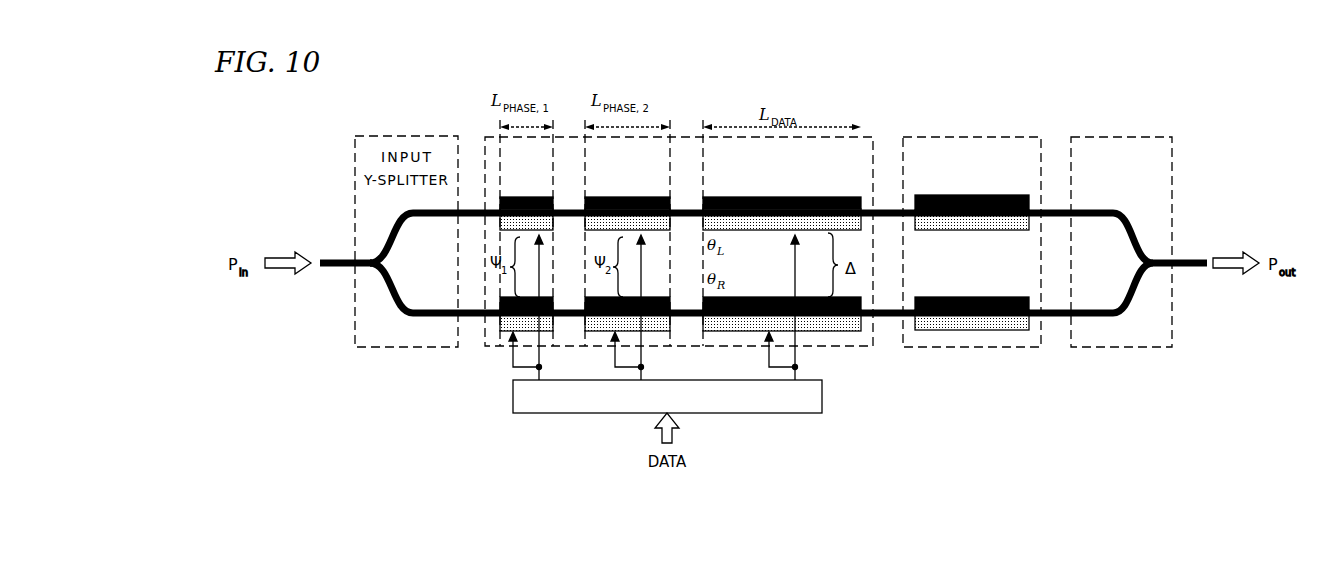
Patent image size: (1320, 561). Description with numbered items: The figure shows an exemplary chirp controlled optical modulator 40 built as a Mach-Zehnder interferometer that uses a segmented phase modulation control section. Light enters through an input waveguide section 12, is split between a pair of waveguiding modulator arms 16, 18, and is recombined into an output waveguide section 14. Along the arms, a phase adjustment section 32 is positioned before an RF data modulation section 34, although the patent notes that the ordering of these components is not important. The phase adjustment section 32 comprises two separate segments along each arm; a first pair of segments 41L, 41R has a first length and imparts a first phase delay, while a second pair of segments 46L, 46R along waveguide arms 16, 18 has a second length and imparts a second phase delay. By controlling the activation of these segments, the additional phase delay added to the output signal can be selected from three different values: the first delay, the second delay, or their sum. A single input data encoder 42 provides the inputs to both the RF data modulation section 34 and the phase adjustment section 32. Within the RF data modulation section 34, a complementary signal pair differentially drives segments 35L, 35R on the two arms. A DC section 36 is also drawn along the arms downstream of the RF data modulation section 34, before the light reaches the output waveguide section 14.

The input waveguide section 12 is at (336, 259).
The output waveguide section 14 is at (1191, 257).
The waveguide arm 16 is at (466, 210).
The waveguide arm 18 is at (468, 324).
The phase adjustment section 32 is at (564, 88).
The RF data modulation section 34 is at (686, 132).
The segment 35L is at (780, 197).
The segment 35R is at (745, 296).
The DC section 36 is at (973, 136).
The optical modulator 40 is at (1083, 102).
The left phase electrode 1 41L is at (540, 197).
The right phase electrode 1 41R is at (548, 296).
The input data encoder 42 is at (823, 399).
The segment 46L is at (638, 197).
The segment 46R is at (646, 296).